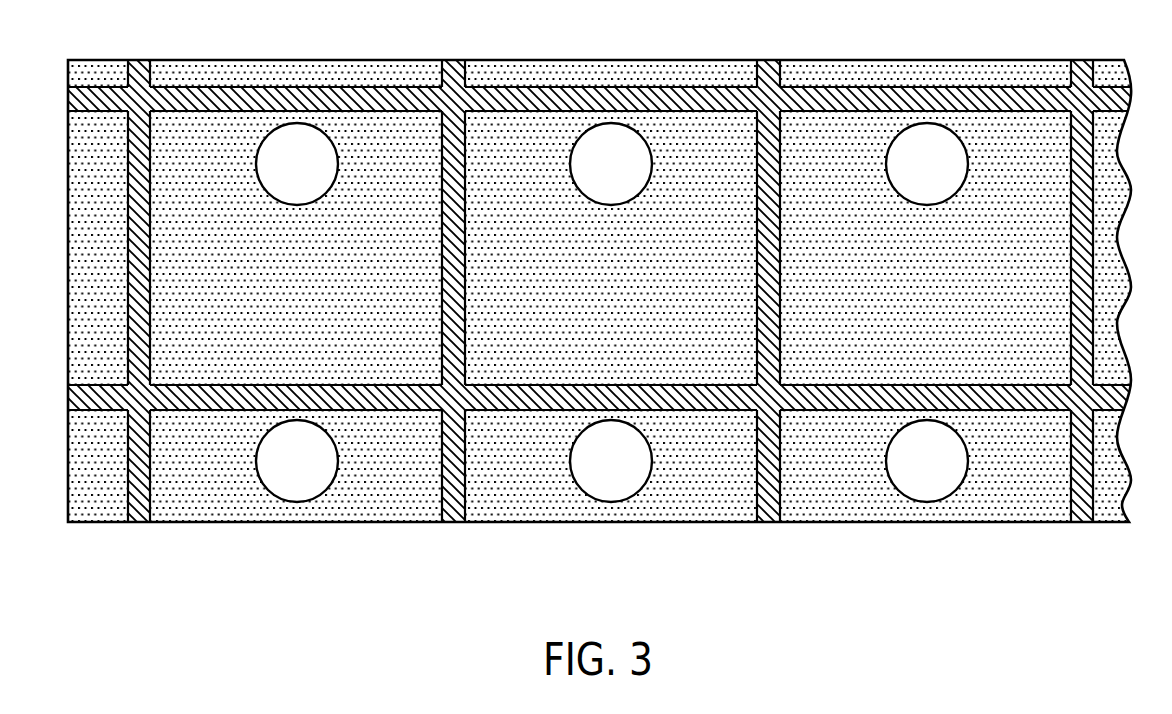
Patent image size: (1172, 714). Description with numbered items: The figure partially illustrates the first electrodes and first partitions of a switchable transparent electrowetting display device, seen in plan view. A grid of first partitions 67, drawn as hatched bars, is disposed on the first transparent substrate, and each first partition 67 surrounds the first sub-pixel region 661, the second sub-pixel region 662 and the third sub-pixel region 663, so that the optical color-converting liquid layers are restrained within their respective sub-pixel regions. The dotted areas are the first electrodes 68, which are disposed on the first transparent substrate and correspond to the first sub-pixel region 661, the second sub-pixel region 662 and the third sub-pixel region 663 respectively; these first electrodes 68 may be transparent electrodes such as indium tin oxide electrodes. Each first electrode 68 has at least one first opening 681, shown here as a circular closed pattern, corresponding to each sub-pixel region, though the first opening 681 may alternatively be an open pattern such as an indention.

The first partition 67 is at (282, 88).
The first electrode 68 is at (182, 317).
The first opening 681 is at (272, 177).
The first sub-pixel region 661 is at (316, 337).
The second sub-pixel region 662 is at (628, 337).
The third sub-pixel region 663 is at (943, 337).